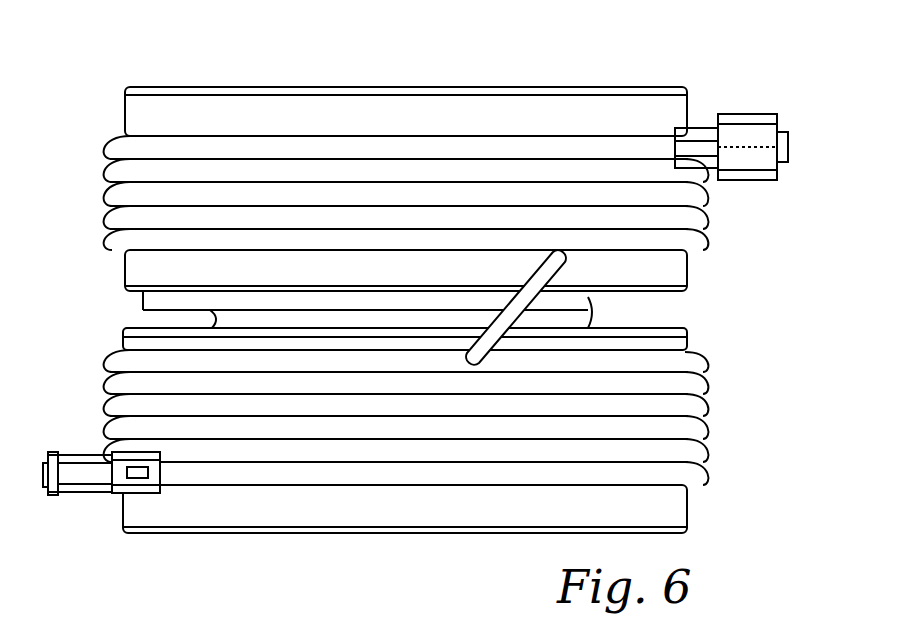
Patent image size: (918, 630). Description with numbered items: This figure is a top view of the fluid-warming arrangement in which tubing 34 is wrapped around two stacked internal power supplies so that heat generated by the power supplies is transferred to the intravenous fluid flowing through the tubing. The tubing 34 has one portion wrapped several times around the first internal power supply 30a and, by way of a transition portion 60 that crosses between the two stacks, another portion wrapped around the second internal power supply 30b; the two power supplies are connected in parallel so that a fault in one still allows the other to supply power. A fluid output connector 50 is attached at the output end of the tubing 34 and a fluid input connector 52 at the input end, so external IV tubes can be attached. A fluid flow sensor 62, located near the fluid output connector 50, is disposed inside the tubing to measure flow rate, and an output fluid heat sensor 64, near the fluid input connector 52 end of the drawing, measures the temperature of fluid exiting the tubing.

The first internal power supply 30a is at (446, 156).
The second internal power supply 30b is at (430, 508).
The tubing 34 is at (697, 213).
The fluid output connector 50 is at (742, 135).
The fluid input connector 52 is at (73, 473).
The transition portion 60 is at (587, 310).
The fluid flow sensor 62 is at (707, 128).
The output fluid heat sensor 64 is at (130, 533).